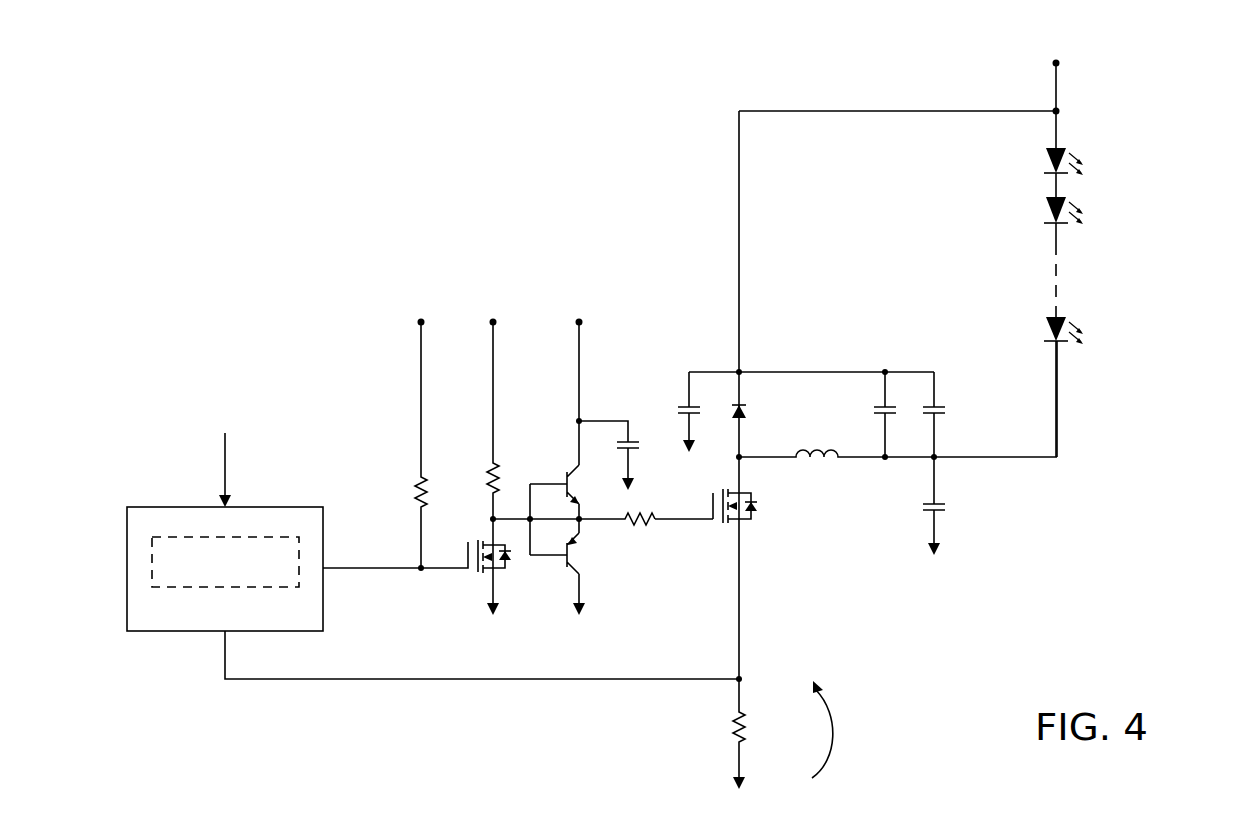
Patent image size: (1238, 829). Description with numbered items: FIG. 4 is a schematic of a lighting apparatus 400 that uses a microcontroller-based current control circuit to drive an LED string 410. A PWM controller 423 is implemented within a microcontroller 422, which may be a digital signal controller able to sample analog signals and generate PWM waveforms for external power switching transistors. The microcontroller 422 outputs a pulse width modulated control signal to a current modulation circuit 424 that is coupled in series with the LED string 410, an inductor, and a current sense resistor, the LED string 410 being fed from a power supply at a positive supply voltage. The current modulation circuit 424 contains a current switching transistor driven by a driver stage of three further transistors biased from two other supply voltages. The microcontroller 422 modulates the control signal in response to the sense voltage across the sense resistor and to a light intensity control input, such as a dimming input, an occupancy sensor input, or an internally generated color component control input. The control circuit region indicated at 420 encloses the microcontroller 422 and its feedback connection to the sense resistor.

The lighting apparatus 400 is at (158, 84).
The LED string 410 is at (1121, 176).
The control circuit 420 is at (235, 731).
The microcontroller 422 is at (127, 568).
The PWM controller 423 is at (226, 537).
The current modulation circuit 424 is at (581, 226).